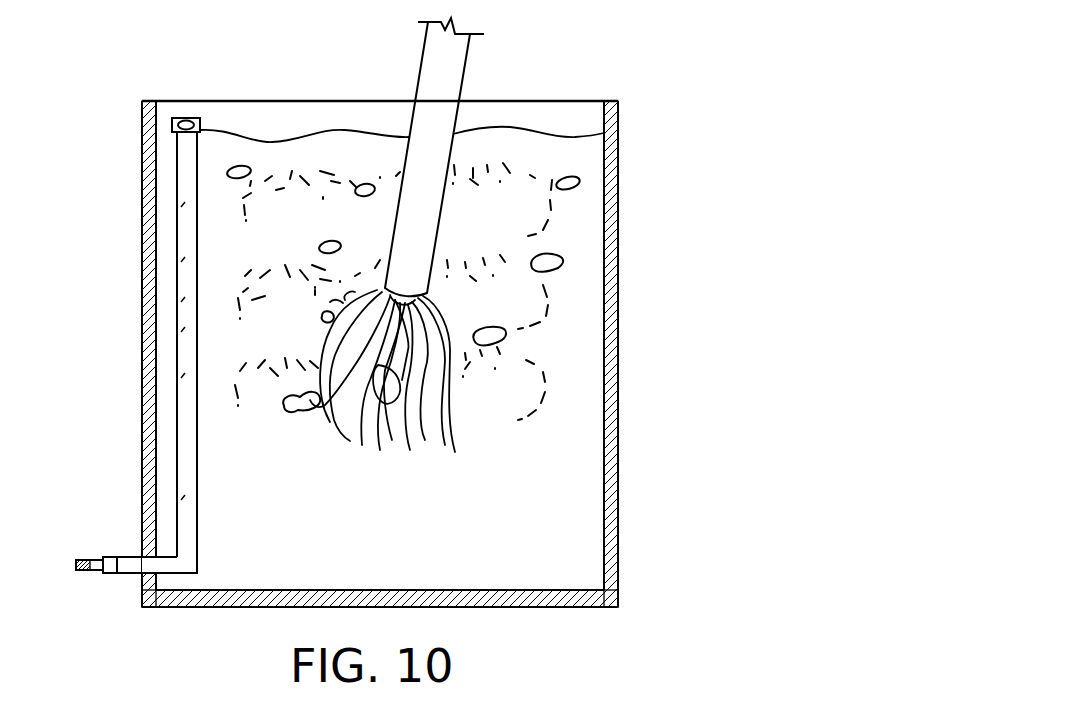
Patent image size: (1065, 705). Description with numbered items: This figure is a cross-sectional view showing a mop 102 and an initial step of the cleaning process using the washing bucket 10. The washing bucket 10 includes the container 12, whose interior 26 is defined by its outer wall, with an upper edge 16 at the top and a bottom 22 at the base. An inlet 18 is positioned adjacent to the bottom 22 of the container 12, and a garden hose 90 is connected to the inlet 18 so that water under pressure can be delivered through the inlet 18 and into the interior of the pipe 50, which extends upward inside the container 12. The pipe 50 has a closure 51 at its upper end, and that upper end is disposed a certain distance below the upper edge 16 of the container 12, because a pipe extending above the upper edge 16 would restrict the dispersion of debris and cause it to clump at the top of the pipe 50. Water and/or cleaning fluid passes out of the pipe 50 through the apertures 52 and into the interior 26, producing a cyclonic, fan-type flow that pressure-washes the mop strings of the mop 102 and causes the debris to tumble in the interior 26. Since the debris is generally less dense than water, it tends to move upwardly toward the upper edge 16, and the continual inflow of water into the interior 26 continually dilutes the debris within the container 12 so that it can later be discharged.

The washing bucket 10 is at (664, 146).
The container 12 is at (608, 225).
The upper edge 16 is at (345, 101).
The inlet 18 is at (130, 562).
The bottom 22 is at (547, 597).
The interior 26 is at (594, 492).
The pipe 50 is at (188, 322).
The closure 51 is at (192, 118).
The apertures 52 is at (187, 250).
The garden hose 90 is at (95, 560).
The mop 102 is at (462, 60).